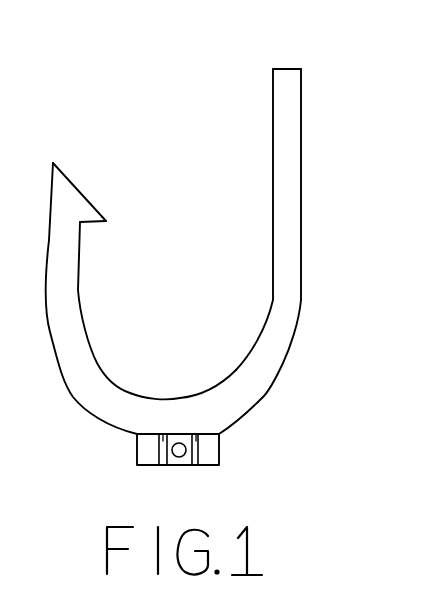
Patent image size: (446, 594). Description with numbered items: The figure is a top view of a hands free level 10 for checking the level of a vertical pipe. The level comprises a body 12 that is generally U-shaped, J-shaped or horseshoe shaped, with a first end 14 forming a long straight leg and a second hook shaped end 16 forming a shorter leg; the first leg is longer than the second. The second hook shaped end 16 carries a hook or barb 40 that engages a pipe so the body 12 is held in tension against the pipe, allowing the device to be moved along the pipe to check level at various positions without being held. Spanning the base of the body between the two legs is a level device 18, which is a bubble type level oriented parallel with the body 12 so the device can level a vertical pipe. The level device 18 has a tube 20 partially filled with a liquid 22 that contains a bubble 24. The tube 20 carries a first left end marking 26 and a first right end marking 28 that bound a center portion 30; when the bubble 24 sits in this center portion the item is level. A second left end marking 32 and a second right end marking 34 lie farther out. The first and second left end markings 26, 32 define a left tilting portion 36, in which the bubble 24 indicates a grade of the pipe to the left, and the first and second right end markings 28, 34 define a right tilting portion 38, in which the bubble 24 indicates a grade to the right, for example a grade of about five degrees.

The hands free level 10 is at (157, 134).
The body 12 is at (289, 241).
The first end 14 is at (284, 52).
The second hook shaped end 16 is at (59, 137).
The level device 18 is at (115, 473).
The tube 20 is at (221, 450).
The liquid 22 is at (211, 465).
The bubble 24 is at (180, 457).
The first left end marking 26 is at (167, 465).
The first right end marking 28 is at (192, 465).
The center portion 30 is at (168, 434).
The second left end marking 32 is at (159, 465).
The second right end marking 34 is at (196, 441).
The left tilting portion 36 is at (163, 441).
The right tilting portion 38 is at (192, 434).
The hook or barb 40 is at (92, 200).